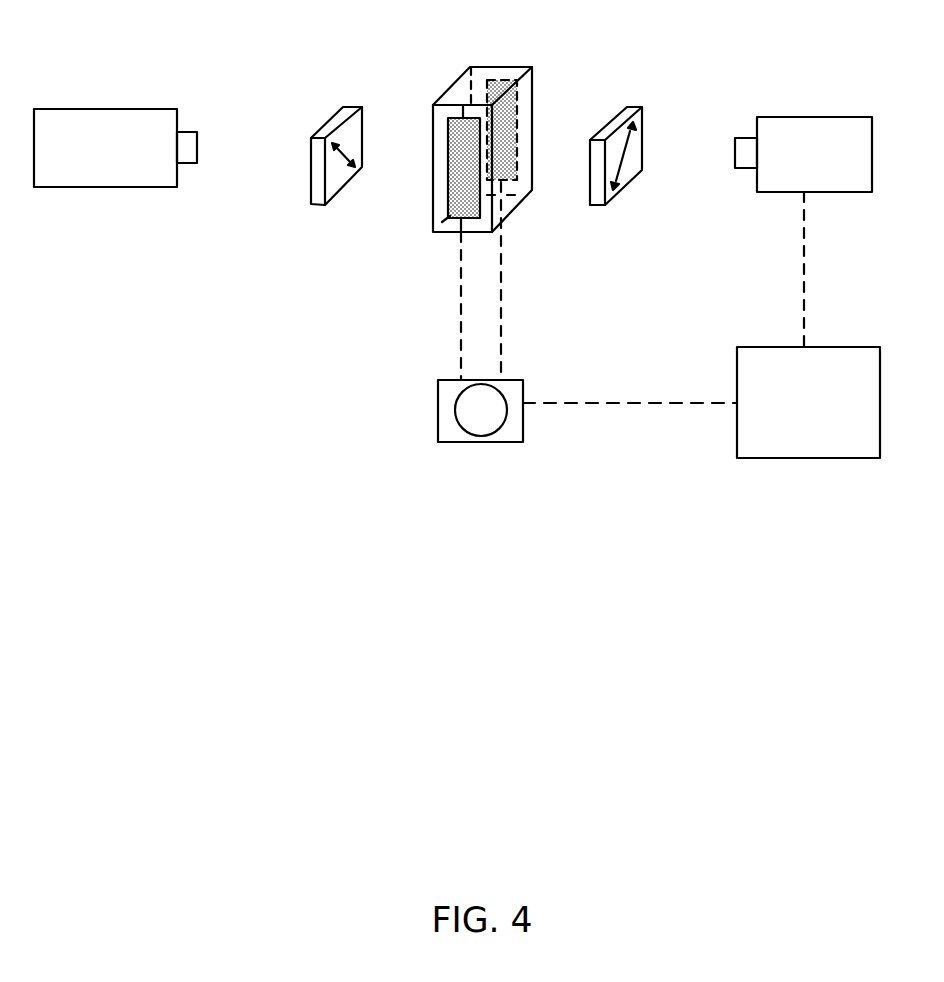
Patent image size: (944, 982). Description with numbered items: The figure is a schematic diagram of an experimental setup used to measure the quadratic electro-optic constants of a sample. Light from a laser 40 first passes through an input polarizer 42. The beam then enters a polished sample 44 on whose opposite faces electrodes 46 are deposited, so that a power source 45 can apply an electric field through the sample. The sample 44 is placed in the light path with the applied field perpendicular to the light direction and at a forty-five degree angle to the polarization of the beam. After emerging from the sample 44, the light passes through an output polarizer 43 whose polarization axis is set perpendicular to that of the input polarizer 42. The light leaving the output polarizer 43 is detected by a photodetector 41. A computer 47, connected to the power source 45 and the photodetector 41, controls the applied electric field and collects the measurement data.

The laser 40 is at (132, 190).
The photodetector 41 is at (778, 195).
The input polarizer 42 is at (347, 107).
The output polarizer 43 is at (623, 108).
The polished sample 44 is at (453, 194).
The power source 45 is at (525, 430).
The electrodes 46 is at (447, 182).
The computer 47 is at (808, 458).